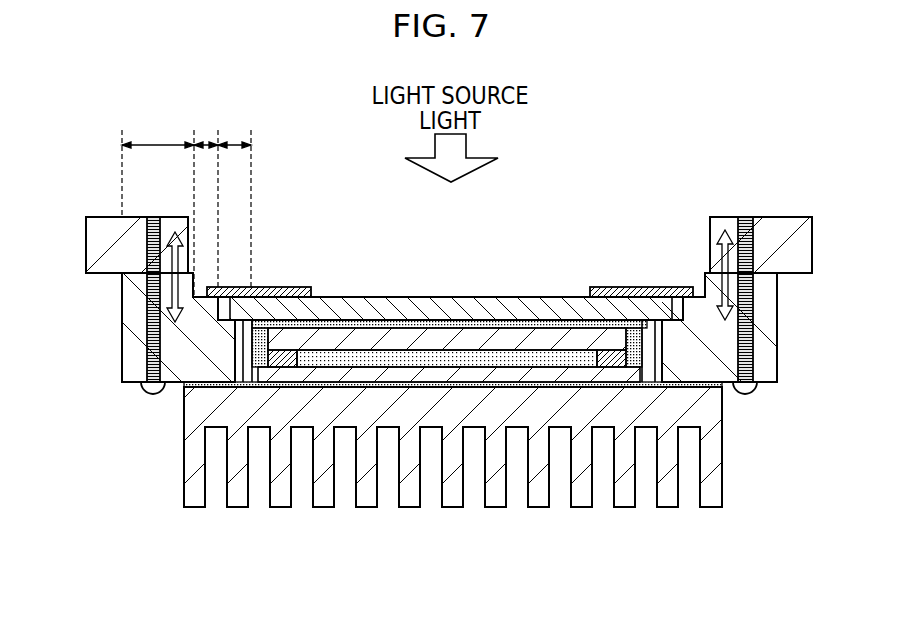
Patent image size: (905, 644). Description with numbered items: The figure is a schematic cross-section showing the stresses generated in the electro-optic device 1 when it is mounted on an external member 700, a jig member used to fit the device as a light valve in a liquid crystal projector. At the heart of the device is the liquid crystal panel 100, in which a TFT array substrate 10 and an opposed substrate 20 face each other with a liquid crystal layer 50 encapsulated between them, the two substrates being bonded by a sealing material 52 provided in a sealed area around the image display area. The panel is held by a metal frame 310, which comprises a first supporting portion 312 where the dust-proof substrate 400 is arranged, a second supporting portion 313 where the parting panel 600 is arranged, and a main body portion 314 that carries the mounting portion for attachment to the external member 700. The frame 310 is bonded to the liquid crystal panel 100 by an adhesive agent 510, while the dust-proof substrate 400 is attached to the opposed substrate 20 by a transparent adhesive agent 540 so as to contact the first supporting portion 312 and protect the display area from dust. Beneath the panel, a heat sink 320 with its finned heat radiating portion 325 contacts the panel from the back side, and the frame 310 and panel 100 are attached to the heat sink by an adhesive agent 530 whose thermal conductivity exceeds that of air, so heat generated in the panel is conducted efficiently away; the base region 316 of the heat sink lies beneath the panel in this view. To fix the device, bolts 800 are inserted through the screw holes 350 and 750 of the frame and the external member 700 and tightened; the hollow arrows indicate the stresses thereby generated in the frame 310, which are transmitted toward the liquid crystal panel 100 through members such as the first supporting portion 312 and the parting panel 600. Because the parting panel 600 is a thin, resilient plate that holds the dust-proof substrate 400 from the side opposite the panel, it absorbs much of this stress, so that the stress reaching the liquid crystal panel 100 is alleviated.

The electro-optic device 1 is at (722, 150).
The TFT array substrate 10 is at (379, 375).
The opposed substrate 20 is at (477, 343).
The liquid crystal layer 50 is at (418, 357).
The sealing material 52 is at (284, 352).
The liquid crystal panel 100 is at (449, 466).
The frame 310 is at (133, 66).
The first supporting portion 312 is at (232, 132).
The second supporting portion 313 is at (205, 132).
The main body portion 314 is at (157, 132).
The base plate 316 is at (333, 403).
The heat sink 320 is at (713, 498).
The heat radiating portion 325 is at (307, 516).
The screw holes 350 is at (150, 338).
The dust-proof substrate 400 is at (537, 297).
The adhesive agent 510 is at (638, 324).
The adhesive agent 530 is at (673, 390).
The transparent adhesive agent 540 is at (481, 328).
The parting panel 600 is at (611, 288).
The external member 700 is at (104, 222).
The screw hole 750 is at (145, 260).
The bolts 800 is at (155, 392).